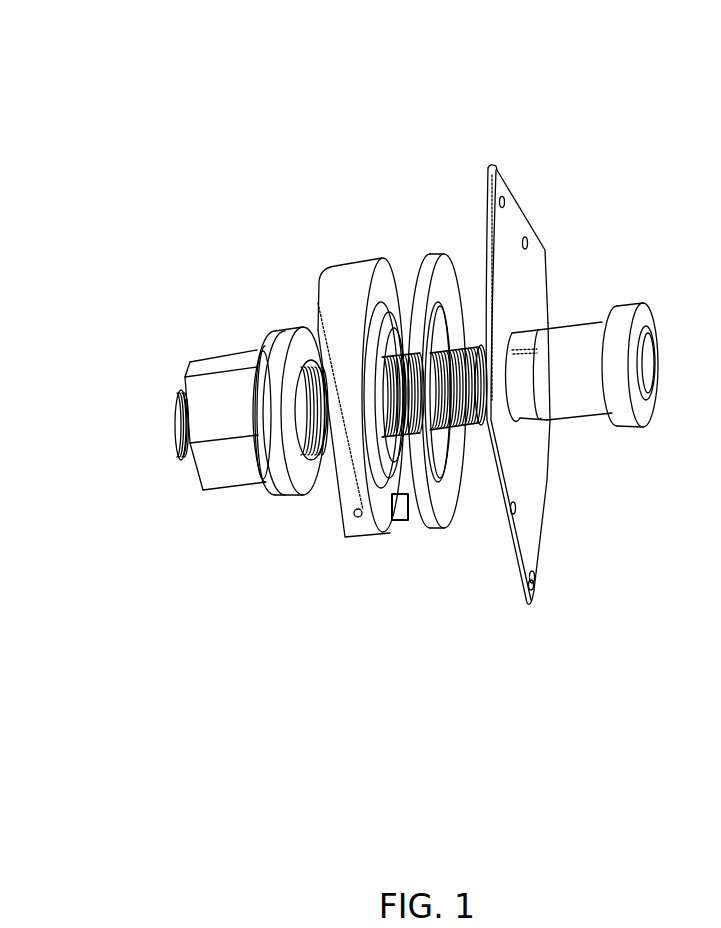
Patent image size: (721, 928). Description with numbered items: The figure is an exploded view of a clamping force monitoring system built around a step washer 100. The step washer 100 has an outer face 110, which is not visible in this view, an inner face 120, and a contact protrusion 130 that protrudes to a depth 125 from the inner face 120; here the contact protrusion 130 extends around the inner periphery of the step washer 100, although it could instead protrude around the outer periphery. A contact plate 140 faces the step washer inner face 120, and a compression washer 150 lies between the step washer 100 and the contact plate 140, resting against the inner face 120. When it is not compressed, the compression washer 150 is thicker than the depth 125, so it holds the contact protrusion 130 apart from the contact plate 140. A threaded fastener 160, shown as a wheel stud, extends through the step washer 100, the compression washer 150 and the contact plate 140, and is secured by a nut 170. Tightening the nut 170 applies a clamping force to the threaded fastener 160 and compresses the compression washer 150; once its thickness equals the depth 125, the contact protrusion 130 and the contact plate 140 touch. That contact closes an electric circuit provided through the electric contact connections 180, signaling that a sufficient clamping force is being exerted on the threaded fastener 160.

The step washer 100 is at (353, 268).
The outer face 110 is at (317, 302).
The inner face 120 is at (383, 272).
The depth 125 is at (398, 522).
The contact protrusion 130 is at (390, 320).
The contact plate 140 is at (527, 283).
The compression washer 150 is at (455, 505).
The threaded fastener 160 is at (587, 333).
The nut 170 is at (221, 348).
The electric contact connections 180 is at (358, 513).